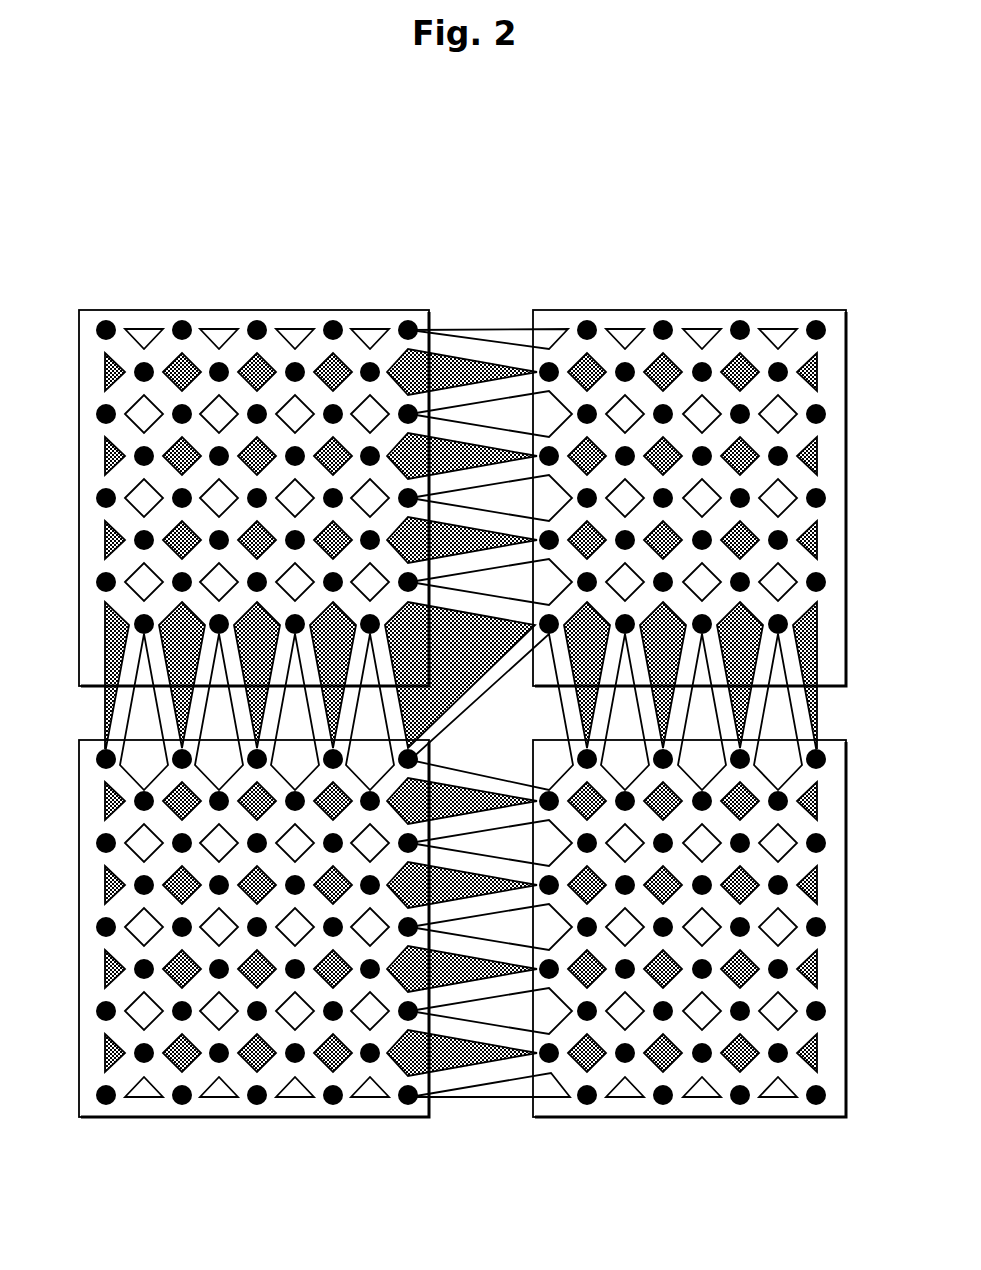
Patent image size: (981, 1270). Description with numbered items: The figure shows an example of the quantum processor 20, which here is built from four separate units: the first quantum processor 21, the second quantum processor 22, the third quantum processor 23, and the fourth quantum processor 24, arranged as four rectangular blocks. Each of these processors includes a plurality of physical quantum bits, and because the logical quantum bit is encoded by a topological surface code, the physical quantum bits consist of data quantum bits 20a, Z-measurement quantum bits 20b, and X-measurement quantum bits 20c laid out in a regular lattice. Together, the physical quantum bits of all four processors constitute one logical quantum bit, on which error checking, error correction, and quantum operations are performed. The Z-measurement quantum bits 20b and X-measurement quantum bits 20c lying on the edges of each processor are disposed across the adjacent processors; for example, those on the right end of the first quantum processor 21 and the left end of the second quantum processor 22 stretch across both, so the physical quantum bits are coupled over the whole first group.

The quantum processor 20 is at (466, 208).
The data quantum bits 20a is at (258, 320).
The Z-measurement quantum bits 20b is at (338, 356).
The X-measurement quantum bits 20c is at (125, 405).
The first quantum processor 21 is at (155, 310).
The second quantum processor 22 is at (604, 310).
The third quantum processor 23 is at (88, 740).
The fourth quantum processor 24 is at (848, 750).